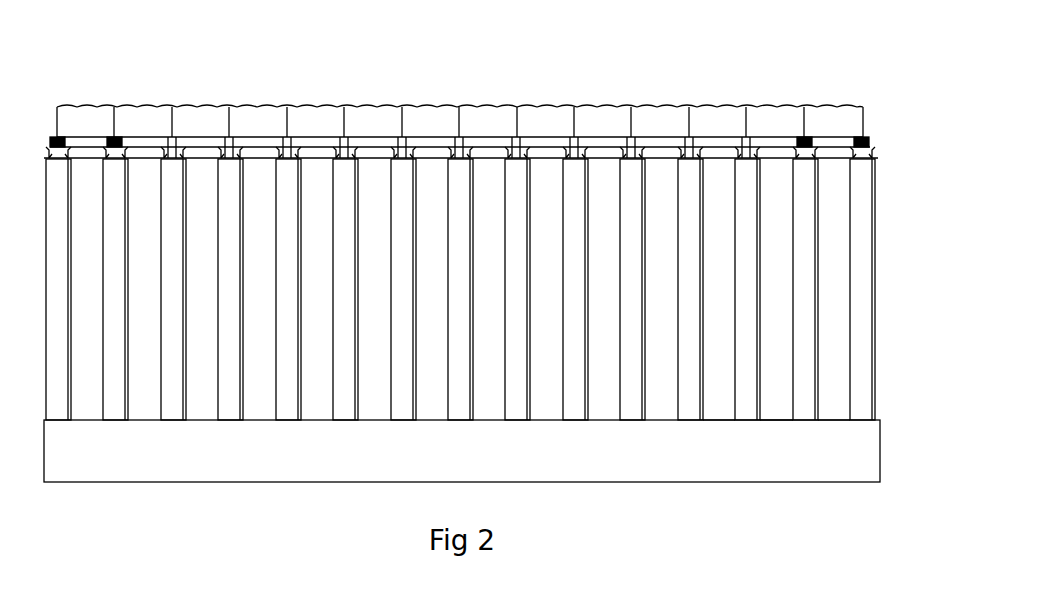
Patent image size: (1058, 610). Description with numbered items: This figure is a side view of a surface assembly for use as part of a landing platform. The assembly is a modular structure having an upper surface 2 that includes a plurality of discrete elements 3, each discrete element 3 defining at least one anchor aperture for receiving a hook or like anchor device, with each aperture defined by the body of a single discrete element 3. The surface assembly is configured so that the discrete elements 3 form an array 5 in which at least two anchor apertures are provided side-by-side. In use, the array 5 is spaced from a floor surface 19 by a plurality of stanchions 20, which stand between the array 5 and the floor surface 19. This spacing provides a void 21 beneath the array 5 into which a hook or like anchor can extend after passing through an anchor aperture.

The upper surface 2 is at (490, 79).
The discrete element 3 is at (852, 108).
The array 5 is at (868, 128).
The floor surface 19 is at (853, 448).
The stanchion 20 is at (858, 258).
The void 21 is at (826, 314).